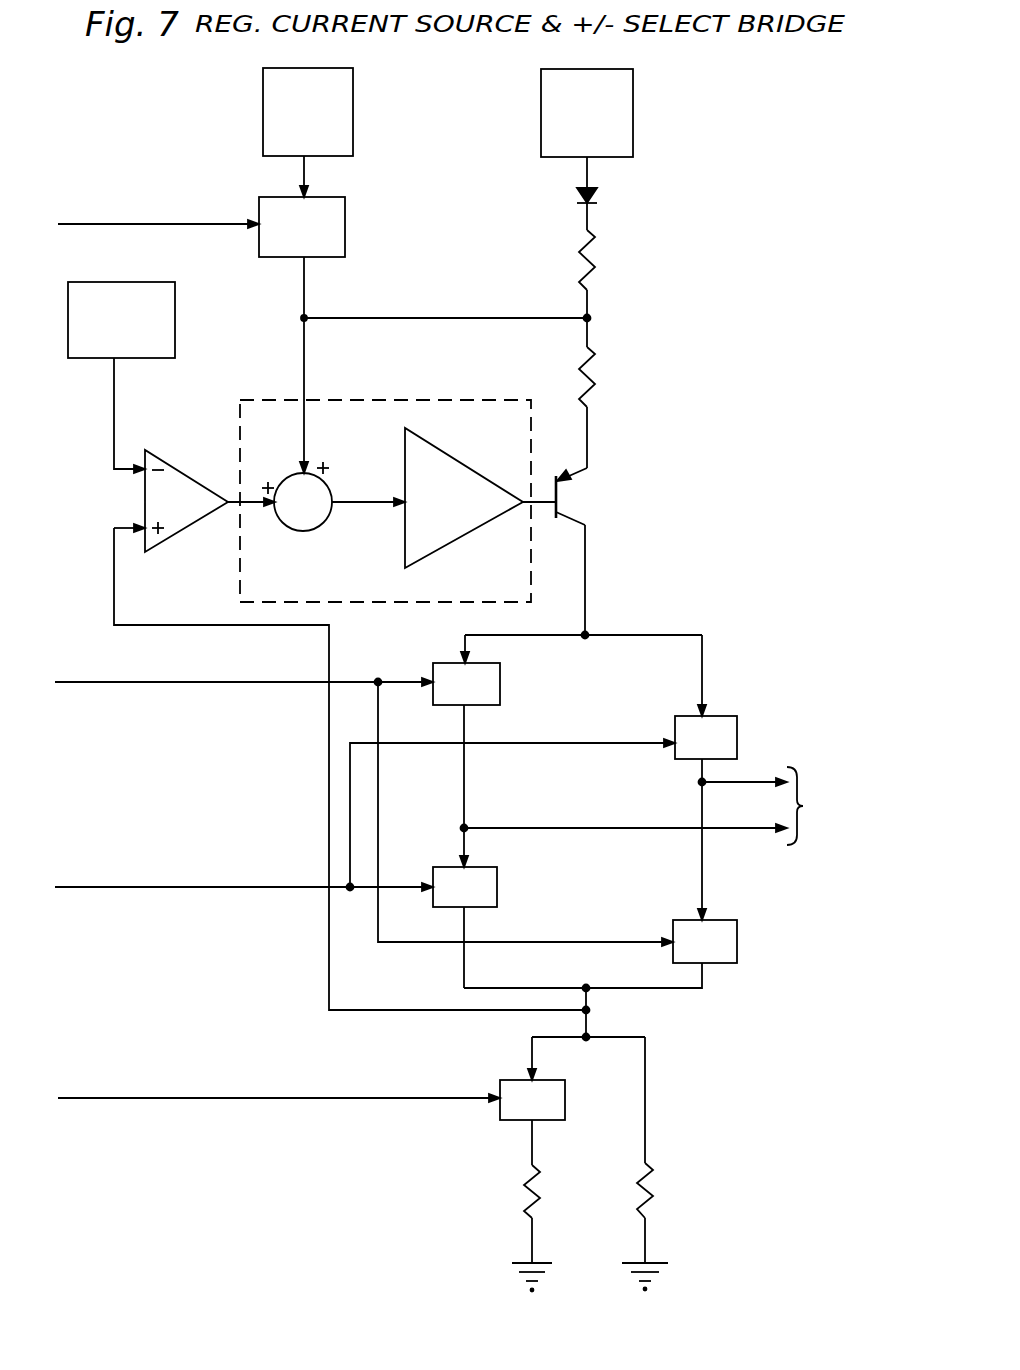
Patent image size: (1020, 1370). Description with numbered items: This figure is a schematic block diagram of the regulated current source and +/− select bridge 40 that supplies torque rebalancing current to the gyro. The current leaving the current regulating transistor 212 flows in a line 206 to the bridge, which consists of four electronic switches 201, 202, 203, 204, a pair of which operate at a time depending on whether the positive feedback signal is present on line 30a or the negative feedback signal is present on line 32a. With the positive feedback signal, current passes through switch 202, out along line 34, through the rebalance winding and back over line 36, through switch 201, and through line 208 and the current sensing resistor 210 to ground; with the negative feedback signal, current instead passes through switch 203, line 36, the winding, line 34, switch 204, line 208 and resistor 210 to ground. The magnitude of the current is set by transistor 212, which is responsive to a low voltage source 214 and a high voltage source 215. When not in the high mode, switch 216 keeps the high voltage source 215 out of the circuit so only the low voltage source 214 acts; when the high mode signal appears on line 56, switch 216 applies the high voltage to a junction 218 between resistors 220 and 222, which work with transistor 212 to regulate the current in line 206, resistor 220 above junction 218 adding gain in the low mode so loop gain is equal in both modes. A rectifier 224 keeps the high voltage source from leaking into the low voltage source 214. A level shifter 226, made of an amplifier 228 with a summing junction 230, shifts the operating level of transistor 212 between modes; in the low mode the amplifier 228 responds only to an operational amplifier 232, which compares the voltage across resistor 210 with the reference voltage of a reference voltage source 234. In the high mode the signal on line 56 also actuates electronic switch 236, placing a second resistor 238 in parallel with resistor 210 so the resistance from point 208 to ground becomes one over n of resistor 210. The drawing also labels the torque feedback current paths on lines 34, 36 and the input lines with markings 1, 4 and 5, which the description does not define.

The high voltage source 215 is at (354, 107).
The low voltage source 214 is at (633, 110).
The switch 216 is at (345, 228).
The HI MODE signal line 5 is at (266, 654).
The line 56 is at (198, 224).
The rectifier 224 is at (597, 196).
The resistor 220 is at (596, 250).
The junction 218 is at (592, 318).
The resistor 222 is at (596, 380).
The current regulating transistor 212 is at (562, 496).
The line 206 is at (580, 575).
The reference voltage source 234 is at (175, 318).
The operational amplifier 232 is at (194, 438).
The level shifter 226 is at (432, 400).
The summing junction 230 is at (360, 456).
The amplifier 228 is at (455, 456).
The regulated current source and +/− select bridge 40 is at (736, 624).
The feedback signal lines 4 is at (227, 781).
The line 32a is at (352, 683).
The line 30a is at (392, 885).
The electronic switch 203 is at (500, 683).
The electronic switch 202 is at (737, 716).
The line 34 is at (750, 786).
The line 36 is at (735, 830).
The torque feedback current 1 is at (838, 817).
The electronic switch 201 is at (497, 888).
The electronic switch 204 is at (737, 943).
The line 208 is at (586, 1022).
The electronic switch 236 is at (500, 1113).
The second resistor 238 is at (522, 1195).
The current sensing resistor 210 is at (655, 1190).